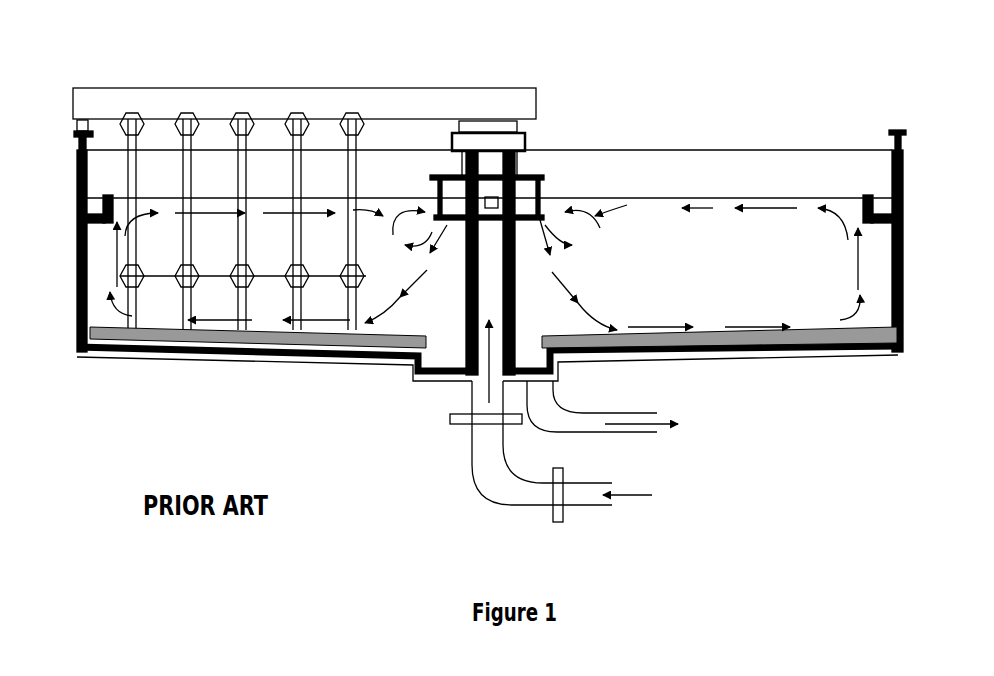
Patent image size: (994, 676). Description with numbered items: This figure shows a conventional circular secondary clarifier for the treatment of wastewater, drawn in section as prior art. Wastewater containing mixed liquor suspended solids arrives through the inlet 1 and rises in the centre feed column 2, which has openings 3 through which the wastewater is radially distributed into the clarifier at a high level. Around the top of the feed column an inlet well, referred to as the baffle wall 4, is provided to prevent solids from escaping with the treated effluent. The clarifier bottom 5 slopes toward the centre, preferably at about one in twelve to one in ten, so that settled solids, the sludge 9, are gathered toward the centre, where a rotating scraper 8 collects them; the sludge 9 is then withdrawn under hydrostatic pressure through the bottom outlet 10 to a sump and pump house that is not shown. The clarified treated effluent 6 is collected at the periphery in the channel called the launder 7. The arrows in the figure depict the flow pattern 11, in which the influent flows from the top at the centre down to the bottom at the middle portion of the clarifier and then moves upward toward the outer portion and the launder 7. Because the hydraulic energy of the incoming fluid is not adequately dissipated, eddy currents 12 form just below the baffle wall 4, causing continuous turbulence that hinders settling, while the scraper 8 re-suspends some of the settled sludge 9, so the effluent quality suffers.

The inlet 1 is at (573, 451).
The centre feed column 2 is at (520, 291).
The openings 3 is at (488, 192).
The baffle wall 4 is at (545, 193).
The clarifier bottom 5 is at (805, 345).
The treated effluent 6 is at (77, 238).
The launder 7 is at (862, 198).
The rotating scraper 8 is at (292, 148).
The sludge 9 is at (710, 330).
The bottom outlet 10 is at (623, 409).
The flow pattern 11 is at (865, 258).
The eddy currents 12 is at (432, 200).